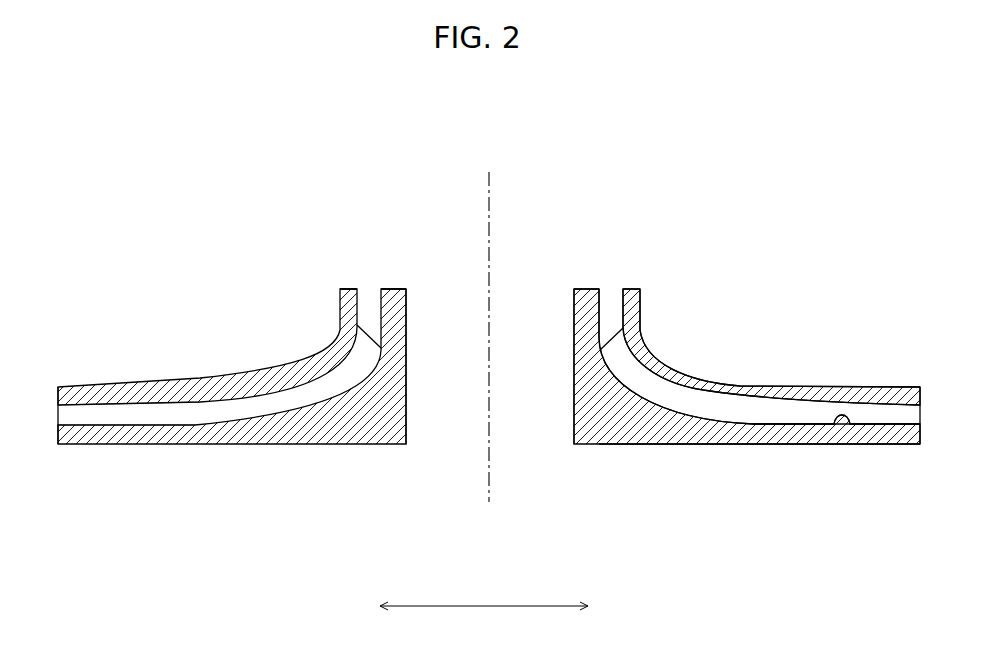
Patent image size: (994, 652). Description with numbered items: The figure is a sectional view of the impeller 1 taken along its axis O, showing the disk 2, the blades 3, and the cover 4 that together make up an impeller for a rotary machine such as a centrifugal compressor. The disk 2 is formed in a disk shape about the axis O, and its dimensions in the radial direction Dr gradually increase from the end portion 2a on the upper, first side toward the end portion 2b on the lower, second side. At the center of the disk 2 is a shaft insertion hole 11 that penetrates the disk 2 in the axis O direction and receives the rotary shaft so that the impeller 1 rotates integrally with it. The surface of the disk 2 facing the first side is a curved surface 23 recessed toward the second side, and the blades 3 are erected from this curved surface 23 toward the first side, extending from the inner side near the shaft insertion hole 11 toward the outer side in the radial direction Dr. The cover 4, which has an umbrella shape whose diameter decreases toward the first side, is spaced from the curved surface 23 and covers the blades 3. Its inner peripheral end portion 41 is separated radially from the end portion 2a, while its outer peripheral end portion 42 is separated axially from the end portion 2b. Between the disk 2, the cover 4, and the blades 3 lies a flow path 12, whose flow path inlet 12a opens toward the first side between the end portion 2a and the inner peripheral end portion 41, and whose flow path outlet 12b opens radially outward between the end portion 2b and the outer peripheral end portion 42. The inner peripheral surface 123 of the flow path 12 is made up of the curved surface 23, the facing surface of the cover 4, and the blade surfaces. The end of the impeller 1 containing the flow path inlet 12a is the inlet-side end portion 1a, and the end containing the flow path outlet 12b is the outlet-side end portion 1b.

The impeller 1 is at (476, 355).
The inlet-side end portion 1a is at (386, 289).
The outlet-side end portion 1b is at (57, 406).
The disk 2 is at (680, 428).
The end portion 2a is at (584, 289).
The end portion 2b is at (921, 446).
The blade 3 is at (222, 408).
The cover 4 is at (818, 392).
The shaft insertion hole 11 is at (574, 397).
The flow path 12 is at (833, 410).
The flow path inlet 12a is at (611, 303).
The flow path outlet 12b is at (922, 408).
The inner peripheral surface 123 is at (866, 417).
The curved surface 23 is at (728, 403).
The inner peripheral end portion 41 is at (631, 289).
The outer peripheral end portion 42 is at (887, 387).
The axis O is at (485, 235).
The radial direction Dr is at (484, 625).